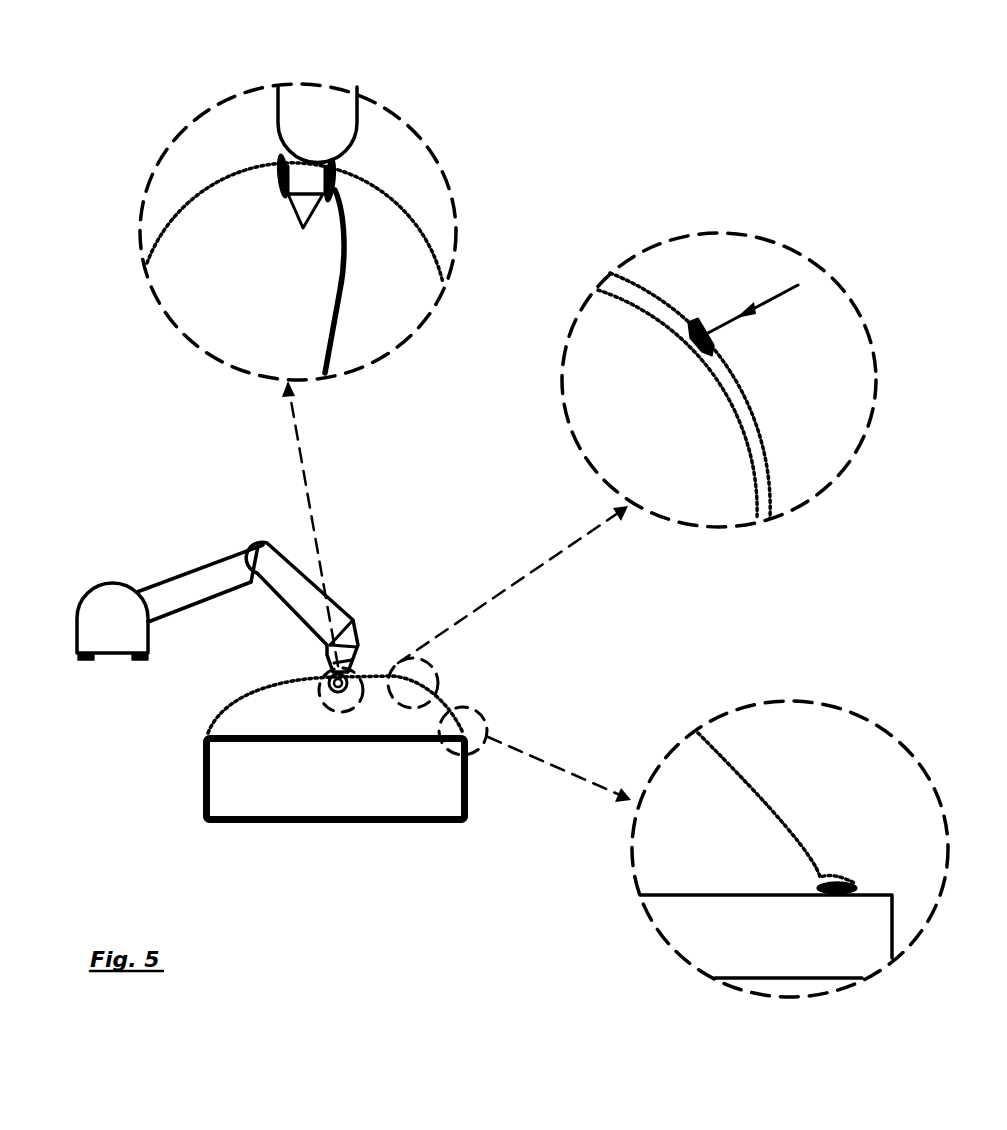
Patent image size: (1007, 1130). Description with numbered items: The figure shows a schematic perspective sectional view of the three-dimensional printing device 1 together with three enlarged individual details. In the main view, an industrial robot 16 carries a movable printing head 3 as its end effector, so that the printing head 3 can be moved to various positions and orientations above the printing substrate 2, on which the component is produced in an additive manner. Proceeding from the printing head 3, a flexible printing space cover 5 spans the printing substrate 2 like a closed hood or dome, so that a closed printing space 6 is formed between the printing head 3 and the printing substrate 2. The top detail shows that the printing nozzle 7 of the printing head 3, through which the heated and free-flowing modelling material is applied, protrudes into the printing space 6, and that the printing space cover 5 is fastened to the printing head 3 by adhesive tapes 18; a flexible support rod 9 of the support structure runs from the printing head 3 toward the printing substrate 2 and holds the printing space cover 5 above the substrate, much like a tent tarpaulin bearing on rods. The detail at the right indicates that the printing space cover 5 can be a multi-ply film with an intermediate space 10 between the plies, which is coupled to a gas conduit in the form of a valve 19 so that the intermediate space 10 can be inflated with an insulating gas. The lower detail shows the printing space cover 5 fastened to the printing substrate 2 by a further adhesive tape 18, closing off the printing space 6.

The 3D printing device 1 is at (422, 553).
The printing substrate 2 is at (250, 733).
The printing head 3 is at (323, 678).
The printing space cover 5 is at (440, 700).
The printing space 6 is at (216, 301).
The printing nozzle 7 is at (296, 204).
The support rods 9 is at (332, 270).
The intermediate space 10 is at (654, 310).
The industrial robot 16 is at (90, 596).
The adhesive tapes 18 is at (336, 172).
The valve 19 is at (720, 335).